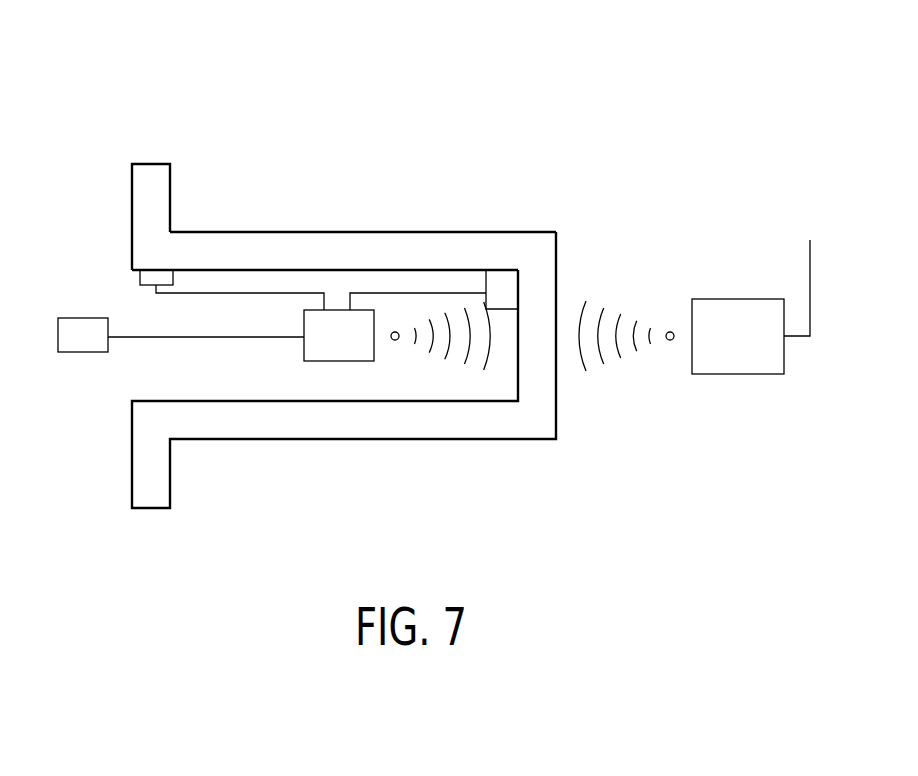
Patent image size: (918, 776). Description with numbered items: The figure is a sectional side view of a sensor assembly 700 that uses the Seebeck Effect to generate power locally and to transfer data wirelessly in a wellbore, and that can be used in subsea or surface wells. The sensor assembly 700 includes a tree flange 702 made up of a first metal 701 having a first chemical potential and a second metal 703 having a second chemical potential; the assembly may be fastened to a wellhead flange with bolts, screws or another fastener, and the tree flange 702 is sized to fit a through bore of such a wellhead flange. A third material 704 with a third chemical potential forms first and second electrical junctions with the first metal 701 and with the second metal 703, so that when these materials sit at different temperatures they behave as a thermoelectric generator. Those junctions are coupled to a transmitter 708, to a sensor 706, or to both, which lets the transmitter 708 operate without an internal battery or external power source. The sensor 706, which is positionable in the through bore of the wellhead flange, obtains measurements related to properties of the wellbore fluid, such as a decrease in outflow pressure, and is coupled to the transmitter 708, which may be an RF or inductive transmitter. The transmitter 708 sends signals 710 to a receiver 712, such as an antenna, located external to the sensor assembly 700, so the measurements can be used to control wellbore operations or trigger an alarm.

The sensor assembly 700 is at (490, 80).
The first metal 701 is at (162, 148).
The tree flange 702 is at (310, 205).
The second metal 703 is at (537, 230).
The third material 704 is at (159, 266).
The sensor 706 is at (82, 318).
The transmitter 708 is at (355, 379).
The signals 710 is at (592, 290).
The receiver 712 is at (788, 240).